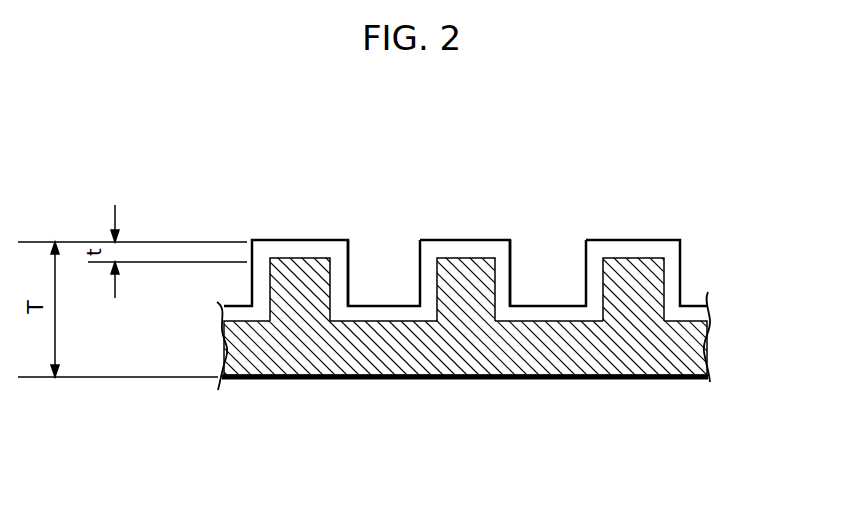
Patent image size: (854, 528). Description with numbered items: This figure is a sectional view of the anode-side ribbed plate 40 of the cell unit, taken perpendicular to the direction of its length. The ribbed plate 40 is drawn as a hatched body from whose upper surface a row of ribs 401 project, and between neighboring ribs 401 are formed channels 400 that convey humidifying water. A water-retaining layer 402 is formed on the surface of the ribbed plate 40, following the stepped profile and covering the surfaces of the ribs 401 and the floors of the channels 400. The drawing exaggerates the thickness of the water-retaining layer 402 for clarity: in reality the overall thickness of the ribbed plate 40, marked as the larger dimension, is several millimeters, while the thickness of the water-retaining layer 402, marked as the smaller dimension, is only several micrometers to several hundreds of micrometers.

The ribbed plate 40 is at (585, 398).
The channels 400 is at (384, 258).
The ribs 401 is at (665, 257).
The water-retaining layer 402 is at (290, 238).